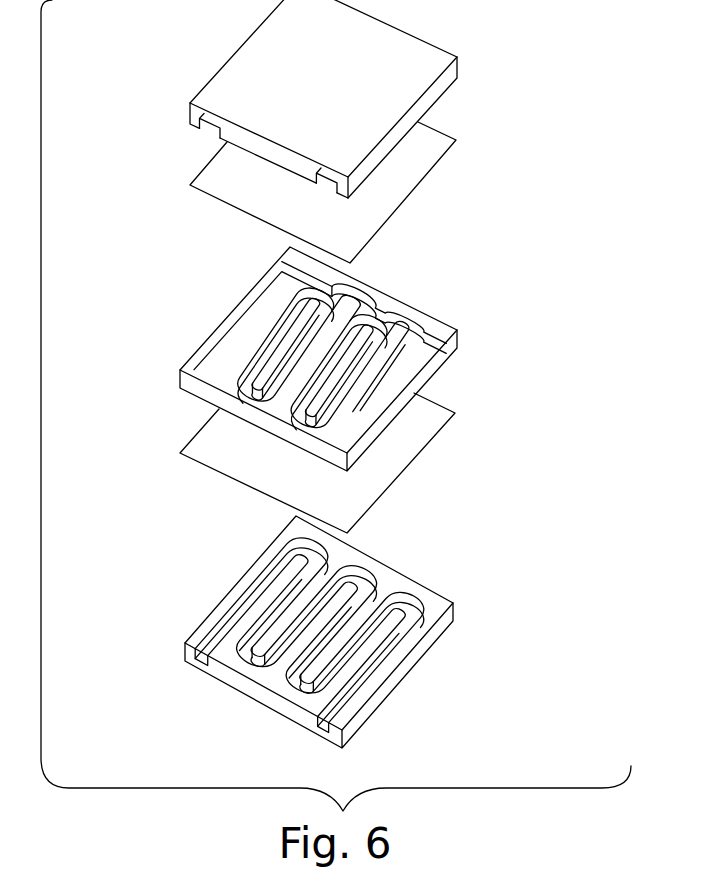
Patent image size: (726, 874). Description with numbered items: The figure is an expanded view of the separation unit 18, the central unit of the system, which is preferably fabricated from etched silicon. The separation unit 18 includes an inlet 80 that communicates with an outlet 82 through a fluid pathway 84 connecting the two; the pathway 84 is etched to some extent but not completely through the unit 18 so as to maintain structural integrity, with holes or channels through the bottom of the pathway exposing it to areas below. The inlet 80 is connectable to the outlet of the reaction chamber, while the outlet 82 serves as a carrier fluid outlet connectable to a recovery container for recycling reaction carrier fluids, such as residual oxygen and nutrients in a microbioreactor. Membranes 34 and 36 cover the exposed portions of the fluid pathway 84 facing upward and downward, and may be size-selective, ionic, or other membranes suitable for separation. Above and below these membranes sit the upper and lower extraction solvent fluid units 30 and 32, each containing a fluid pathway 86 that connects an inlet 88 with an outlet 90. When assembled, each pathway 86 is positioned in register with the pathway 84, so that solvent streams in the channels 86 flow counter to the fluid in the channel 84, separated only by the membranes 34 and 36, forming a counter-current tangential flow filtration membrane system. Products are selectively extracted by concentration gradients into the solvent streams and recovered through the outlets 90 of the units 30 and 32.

The separation unit 18 is at (300, 358).
The upper extraction solvent fluid unit 30 is at (457, 76).
The lower extraction solvent fluid unit 32 is at (352, 632).
The membrane 34 is at (446, 152).
The membrane 36 is at (417, 460).
The inlet 80 is at (352, 358).
The outlet 82 is at (367, 298).
The fluid pathway 84 is at (376, 309).
The fluid pathway 86 is at (368, 590).
The inlet 88 is at (329, 185).
The outlet 90 is at (212, 126).